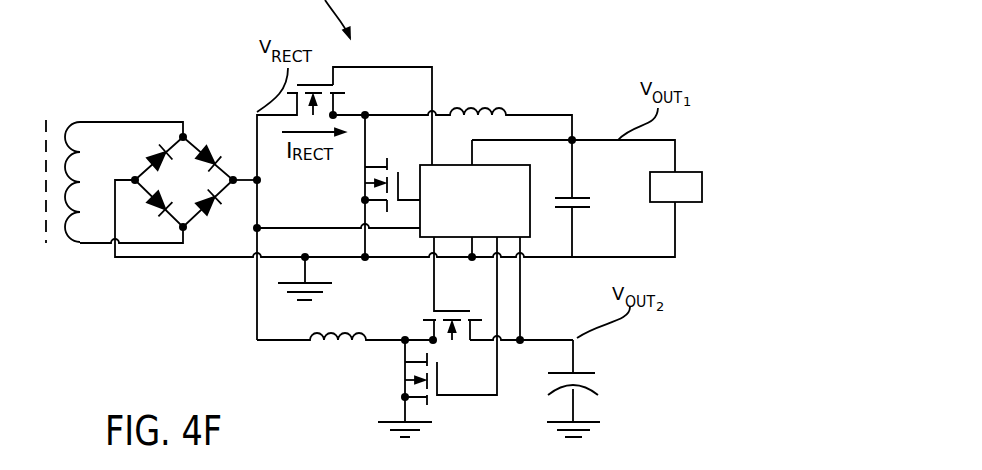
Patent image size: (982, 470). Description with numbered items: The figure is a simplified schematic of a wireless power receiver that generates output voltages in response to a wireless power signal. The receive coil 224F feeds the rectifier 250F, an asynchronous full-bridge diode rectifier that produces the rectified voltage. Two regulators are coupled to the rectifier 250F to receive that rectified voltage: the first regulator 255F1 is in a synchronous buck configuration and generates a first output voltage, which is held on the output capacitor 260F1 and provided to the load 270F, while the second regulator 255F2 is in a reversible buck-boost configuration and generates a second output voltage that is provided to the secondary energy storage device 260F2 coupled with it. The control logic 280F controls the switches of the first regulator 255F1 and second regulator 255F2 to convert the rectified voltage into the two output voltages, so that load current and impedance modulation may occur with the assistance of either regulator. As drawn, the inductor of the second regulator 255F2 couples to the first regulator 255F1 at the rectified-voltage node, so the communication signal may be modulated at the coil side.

The receive coil 224F is at (95, 248).
The rectifier 250F is at (212, 129).
The first regulator 255F1 is at (440, 62).
The second regulator 255F2 is at (342, 370).
The output capacitor 260F1 is at (580, 196).
The secondary energy storage device 260F2 is at (590, 373).
The load 270F is at (702, 180).
The control logic 280F is at (530, 215).